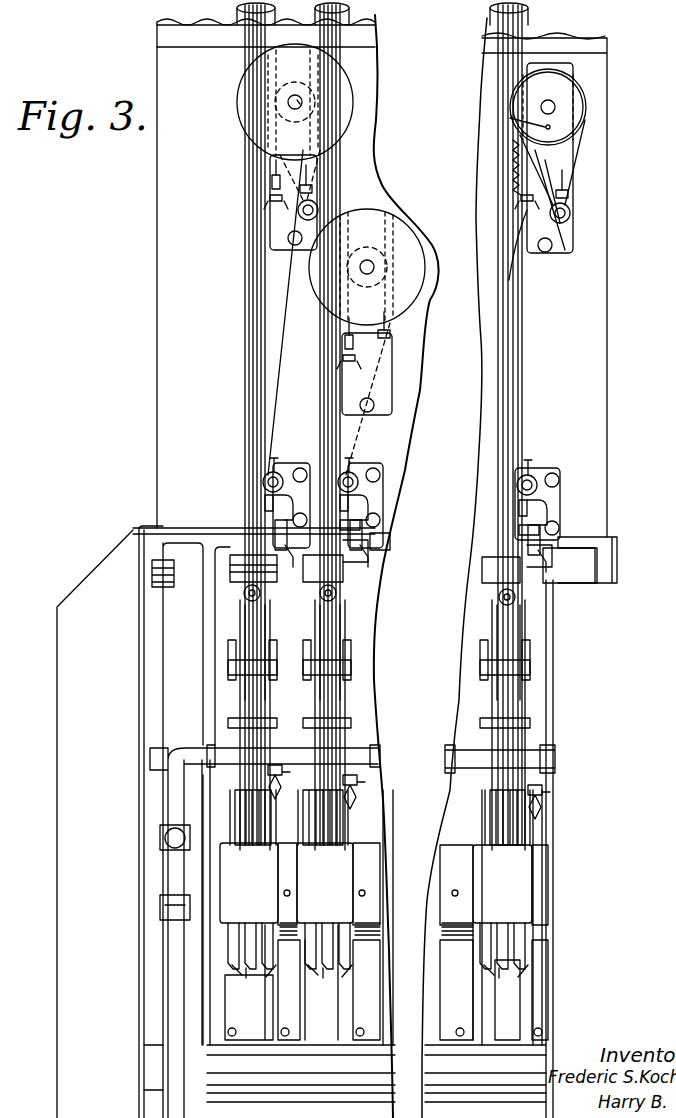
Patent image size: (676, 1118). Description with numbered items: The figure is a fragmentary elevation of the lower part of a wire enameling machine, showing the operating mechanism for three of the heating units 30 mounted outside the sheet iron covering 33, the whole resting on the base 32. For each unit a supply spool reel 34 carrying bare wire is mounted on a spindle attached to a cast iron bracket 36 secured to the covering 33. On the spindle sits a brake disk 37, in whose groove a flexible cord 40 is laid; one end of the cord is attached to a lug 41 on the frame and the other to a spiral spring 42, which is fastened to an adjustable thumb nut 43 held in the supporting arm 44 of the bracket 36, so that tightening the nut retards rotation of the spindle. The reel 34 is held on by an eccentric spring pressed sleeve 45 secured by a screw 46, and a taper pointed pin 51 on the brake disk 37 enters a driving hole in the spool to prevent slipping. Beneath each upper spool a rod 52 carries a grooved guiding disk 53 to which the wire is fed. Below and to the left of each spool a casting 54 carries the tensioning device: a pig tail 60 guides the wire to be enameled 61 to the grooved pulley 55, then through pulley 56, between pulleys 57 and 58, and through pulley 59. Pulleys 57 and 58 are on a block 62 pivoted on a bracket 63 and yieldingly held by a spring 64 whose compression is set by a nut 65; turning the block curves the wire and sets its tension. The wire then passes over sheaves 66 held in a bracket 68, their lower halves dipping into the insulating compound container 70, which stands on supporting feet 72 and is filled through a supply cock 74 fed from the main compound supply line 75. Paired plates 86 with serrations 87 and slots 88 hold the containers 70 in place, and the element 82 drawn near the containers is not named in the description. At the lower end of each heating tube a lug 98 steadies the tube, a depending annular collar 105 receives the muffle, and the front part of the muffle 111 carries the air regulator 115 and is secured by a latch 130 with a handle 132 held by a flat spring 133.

The heating unit 30 is at (352, 10).
The base 32 is at (546, 983).
The sheet iron covering 33 is at (180, 280).
The supply spool reel 34 is at (345, 90).
The cast iron bracket 36 is at (270, 232).
The brake disk 37 is at (565, 95).
The flexible cord 40 is at (330, 165).
The lug 41 is at (320, 190).
The spiral spring 42 is at (272, 168).
The adjustable thumb nut 43 is at (268, 203).
The supporting arm 44 is at (563, 250).
The eccentric spring pressed sleeve 45 is at (300, 100).
The screw 46 is at (290, 100).
The taper pointed pin 51 is at (508, 118).
The rod 52 is at (300, 215).
The grooved guiding disk 53 is at (383, 425).
The casting 54 is at (290, 490).
The grooved pulley 55 is at (265, 478).
The grooved pulley 56 is at (265, 500).
The grooved pulley 57 is at (268, 520).
The grooved pulley 58 is at (275, 535).
The grooved pulley 59 is at (290, 560).
The steel spiral spring or pig tail 60 is at (272, 460).
The wire to be enameled 61 is at (235, 8).
The block 62 is at (365, 560).
The bracket 63 is at (383, 505).
The spring 64 is at (385, 560).
The nut 65 is at (392, 540).
The grooved pulley or sheave 66 is at (330, 820).
The bracket 68 is at (272, 835).
The insulating compound container 70 is at (376, 883).
The supporting feet 72 is at (380, 986).
The supply cock 74 is at (278, 765).
The main compound supply line 75 is at (200, 748).
The fingers 82 is at (376, 931).
The plate 86 is at (222, 1020).
The corrugations or serrations 87 is at (375, 930).
The cut out or slotted portion 88 is at (396, 948).
The lug 98 is at (230, 530).
The depending annular collar 105 is at (230, 565).
The front part of the muffle 111 is at (240, 622).
The air regulator or vent 115 is at (244, 593).
The latch 130 is at (480, 685).
The handle 132 is at (233, 668).
The flat spring 133 is at (255, 640).